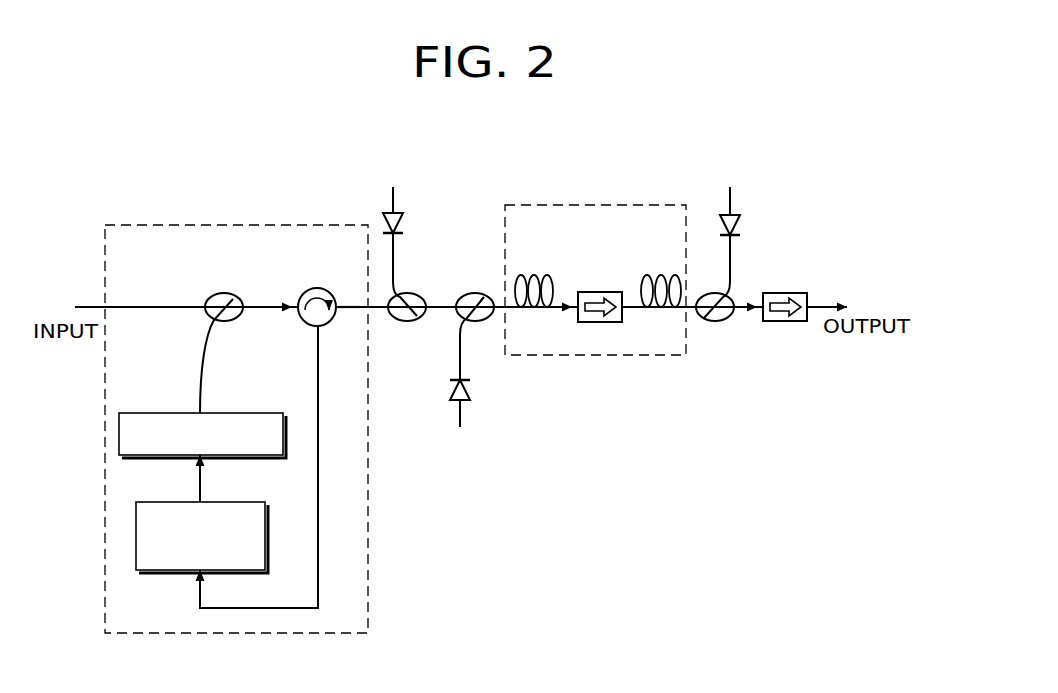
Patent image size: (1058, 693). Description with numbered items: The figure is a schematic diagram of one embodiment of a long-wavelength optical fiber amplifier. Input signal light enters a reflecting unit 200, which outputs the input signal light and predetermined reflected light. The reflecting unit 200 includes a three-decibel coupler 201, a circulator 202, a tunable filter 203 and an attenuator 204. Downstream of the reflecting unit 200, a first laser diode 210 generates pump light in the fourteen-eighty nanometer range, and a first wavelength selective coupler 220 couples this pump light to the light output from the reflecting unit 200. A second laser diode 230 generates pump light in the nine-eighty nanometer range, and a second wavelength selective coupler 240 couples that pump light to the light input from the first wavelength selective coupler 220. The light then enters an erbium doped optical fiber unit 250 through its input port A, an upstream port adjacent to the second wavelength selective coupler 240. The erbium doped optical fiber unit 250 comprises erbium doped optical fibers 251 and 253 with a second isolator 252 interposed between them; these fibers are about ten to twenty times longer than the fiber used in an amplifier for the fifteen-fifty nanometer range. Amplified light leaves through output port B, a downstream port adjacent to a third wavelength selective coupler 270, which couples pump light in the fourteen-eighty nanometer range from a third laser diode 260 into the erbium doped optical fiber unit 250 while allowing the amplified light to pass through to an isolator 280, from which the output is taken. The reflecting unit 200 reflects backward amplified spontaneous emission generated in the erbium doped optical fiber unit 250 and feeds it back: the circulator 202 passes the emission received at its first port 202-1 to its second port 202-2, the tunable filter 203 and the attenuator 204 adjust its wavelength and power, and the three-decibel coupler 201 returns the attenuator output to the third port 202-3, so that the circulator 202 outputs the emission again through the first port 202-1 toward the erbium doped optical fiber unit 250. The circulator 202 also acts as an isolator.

The reflecting unit 200 is at (201, 225).
The 3 dB coupler 201 is at (222, 293).
The circulator 202 is at (300, 322).
The first port 202-1 is at (343, 303).
The second port 202-2 is at (318, 350).
The third port 202-3 is at (273, 300).
The tunable filter 203 is at (233, 503).
The attenuator 204 is at (166, 413).
The first laser diode 210 is at (405, 222).
The first wavelength selective coupler 220 is at (407, 325).
The second laser diode 230 is at (470, 406).
The second wavelength selective coupler 240 is at (473, 292).
The erbium doped optical fiber unit 250 is at (637, 205).
The erbium doped optical fiber 251 is at (553, 272).
The second isolator 252 is at (597, 292).
The erbium doped optical fiber 253 is at (642, 273).
The third laser diode 260 is at (745, 222).
The third wavelength selective coupler 270 is at (715, 325).
The isolator 280 is at (784, 292).
The input port A is at (498, 314).
The output port B is at (693, 298).